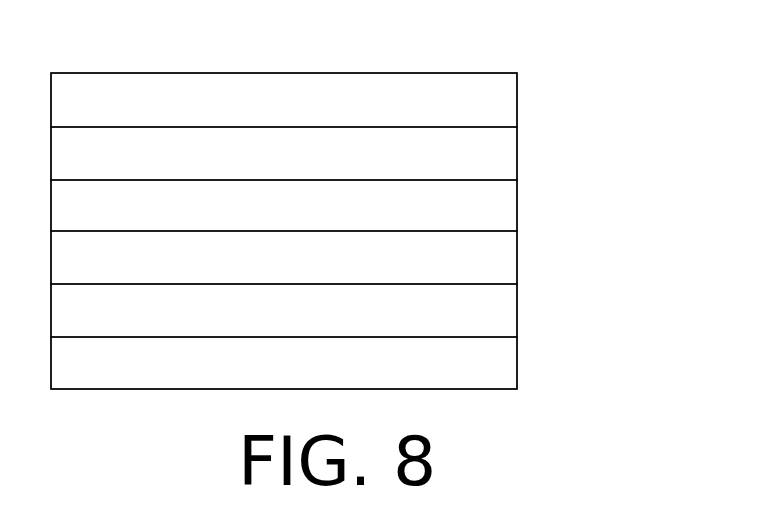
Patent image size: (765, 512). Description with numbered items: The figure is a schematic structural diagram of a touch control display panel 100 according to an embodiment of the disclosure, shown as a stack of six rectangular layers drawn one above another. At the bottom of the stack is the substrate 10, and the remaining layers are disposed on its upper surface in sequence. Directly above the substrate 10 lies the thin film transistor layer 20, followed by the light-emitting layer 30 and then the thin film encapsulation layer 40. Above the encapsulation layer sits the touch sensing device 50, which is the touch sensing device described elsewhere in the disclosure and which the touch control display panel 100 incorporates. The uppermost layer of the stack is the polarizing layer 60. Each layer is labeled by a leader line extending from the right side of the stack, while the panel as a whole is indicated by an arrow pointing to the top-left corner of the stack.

The touch control display panel 100 is at (100, 56).
The substrate 10 is at (336, 357).
The thin film transistor layer 20 is at (336, 304).
The light-emitting layer 30 is at (336, 251).
The thin film encapsulation layer 40 is at (336, 198).
The touch sensing device 50 is at (336, 147).
The polarizing layer 60 is at (336, 95).